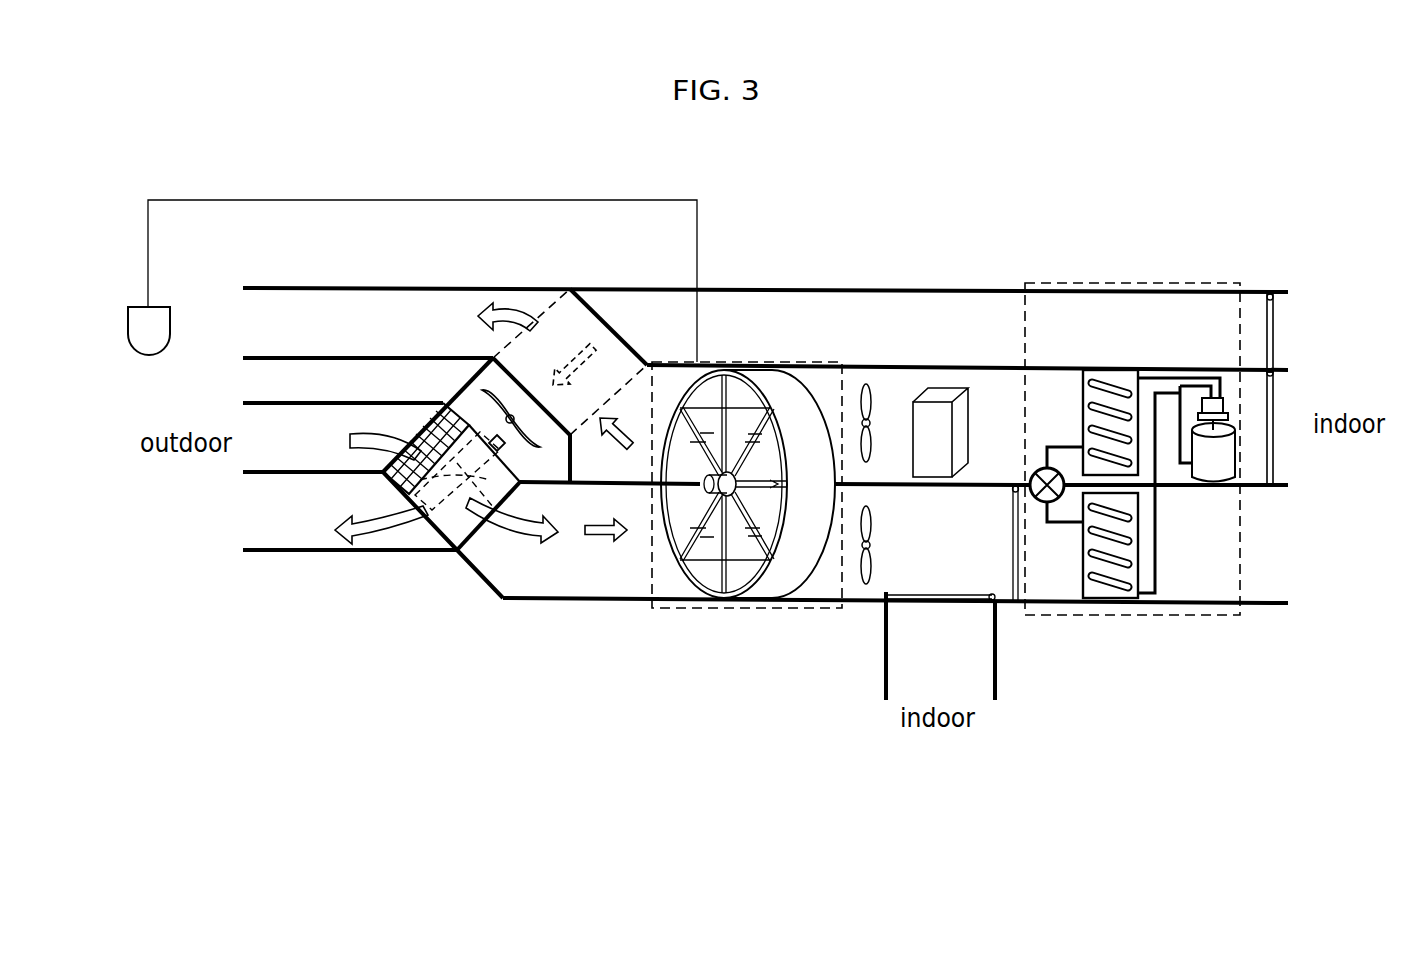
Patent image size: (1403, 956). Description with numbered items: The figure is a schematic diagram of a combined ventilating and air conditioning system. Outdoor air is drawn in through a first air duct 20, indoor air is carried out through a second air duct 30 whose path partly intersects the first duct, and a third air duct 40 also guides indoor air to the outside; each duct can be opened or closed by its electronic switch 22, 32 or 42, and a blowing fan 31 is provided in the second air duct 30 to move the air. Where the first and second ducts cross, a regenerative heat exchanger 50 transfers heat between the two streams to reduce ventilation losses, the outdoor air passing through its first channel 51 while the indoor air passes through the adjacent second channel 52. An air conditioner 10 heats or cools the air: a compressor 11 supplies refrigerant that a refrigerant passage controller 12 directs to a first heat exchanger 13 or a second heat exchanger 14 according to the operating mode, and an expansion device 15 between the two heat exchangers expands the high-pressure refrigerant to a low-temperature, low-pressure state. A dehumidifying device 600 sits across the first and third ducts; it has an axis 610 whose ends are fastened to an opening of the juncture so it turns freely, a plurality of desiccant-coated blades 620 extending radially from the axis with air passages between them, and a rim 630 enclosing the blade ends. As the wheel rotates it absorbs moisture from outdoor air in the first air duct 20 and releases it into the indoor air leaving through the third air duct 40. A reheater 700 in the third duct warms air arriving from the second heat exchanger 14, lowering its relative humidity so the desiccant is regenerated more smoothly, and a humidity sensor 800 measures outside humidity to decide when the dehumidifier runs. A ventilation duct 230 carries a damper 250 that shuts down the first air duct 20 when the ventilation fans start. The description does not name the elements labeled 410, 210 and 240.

The air conditioner 10 is at (1240, 578).
The compressor 11 is at (1228, 474).
The refrigerant passage controller 12 is at (1228, 407).
The first heat exchanger 13 is at (1097, 598).
The second heat exchanger 14 is at (1130, 377).
The expansion device 15 is at (1040, 470).
The first air duct 20 is at (278, 403).
The electronic switch 22 is at (1012, 562).
The second air duct 30 is at (288, 552).
The blowing fan 31 is at (468, 392).
The electronic switch 32 is at (1274, 322).
The third air duct 40 is at (411, 305).
The electronic switch 42 is at (1274, 455).
The regenerative heat exchanger 50 is at (452, 525).
The first channel 51 is at (416, 436).
The second channel 52 is at (427, 520).
The dehumidifying device 600 is at (746, 455).
The axis 610 is at (700, 573).
The blades 620 is at (742, 578).
The rim 630 is at (798, 578).
The indoor fan 410 is at (866, 385).
The reheater 700 is at (938, 400).
The humidity sensor 800 is at (155, 308).
The indoor air outlet duct 210 is at (852, 608).
The ventilation duct 230 is at (997, 680).
The indoor duct partition 240 is at (997, 606).
The damper 250 is at (920, 604).